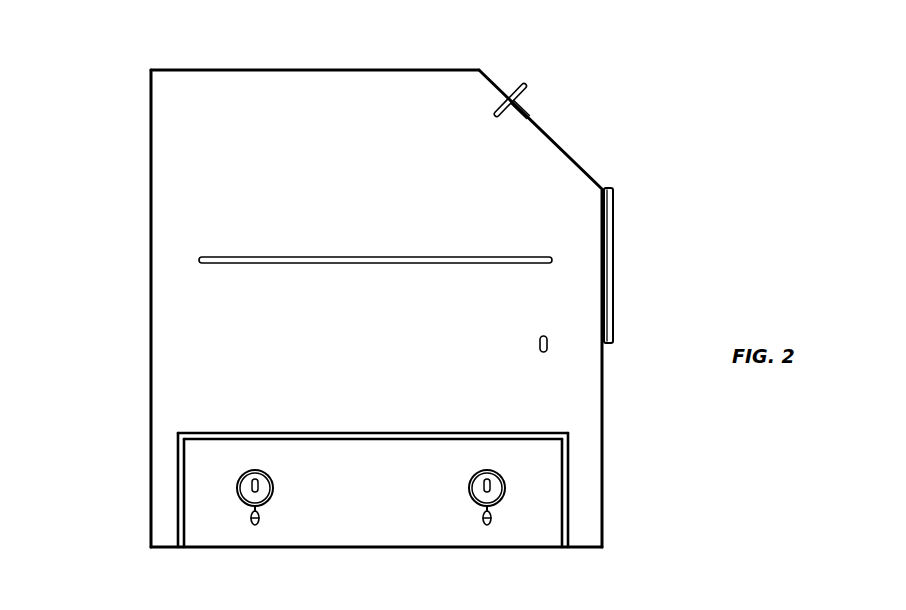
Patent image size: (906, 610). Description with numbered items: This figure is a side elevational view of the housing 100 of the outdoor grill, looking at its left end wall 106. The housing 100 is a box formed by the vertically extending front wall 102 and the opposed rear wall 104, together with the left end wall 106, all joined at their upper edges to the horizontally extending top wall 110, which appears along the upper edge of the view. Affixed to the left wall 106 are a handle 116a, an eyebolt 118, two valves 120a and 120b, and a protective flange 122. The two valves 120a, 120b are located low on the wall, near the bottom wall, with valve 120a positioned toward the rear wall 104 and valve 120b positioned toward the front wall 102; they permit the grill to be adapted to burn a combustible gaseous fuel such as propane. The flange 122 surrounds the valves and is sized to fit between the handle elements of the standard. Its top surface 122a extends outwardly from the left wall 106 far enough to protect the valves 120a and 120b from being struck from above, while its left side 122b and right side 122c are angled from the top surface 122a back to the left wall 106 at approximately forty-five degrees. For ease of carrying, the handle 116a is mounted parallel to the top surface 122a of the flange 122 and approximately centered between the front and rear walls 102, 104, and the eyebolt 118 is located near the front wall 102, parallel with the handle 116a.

The housing 100 is at (620, 85).
The front wall 102 is at (375, 284).
The rear wall 104 is at (151, 330).
The left end wall 106 is at (170, 150).
The top wall 110 is at (203, 68).
The handle 116a is at (283, 258).
The eyebolt 118 is at (539, 342).
The valve 120a is at (255, 525).
The valve 120b is at (487, 525).
The flange 122 is at (372, 474).
The top surface 122a is at (405, 433).
The left side 122b is at (178, 498).
The right side 122c is at (570, 497).